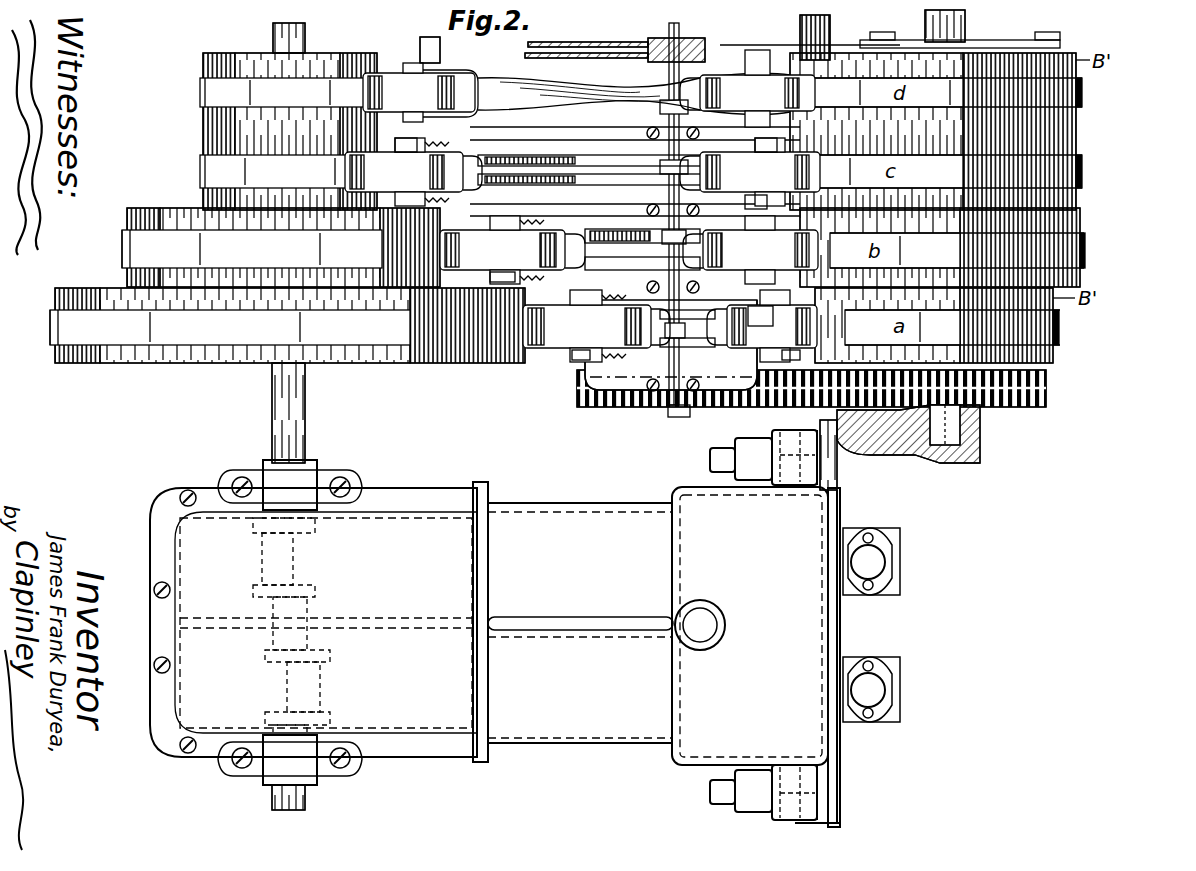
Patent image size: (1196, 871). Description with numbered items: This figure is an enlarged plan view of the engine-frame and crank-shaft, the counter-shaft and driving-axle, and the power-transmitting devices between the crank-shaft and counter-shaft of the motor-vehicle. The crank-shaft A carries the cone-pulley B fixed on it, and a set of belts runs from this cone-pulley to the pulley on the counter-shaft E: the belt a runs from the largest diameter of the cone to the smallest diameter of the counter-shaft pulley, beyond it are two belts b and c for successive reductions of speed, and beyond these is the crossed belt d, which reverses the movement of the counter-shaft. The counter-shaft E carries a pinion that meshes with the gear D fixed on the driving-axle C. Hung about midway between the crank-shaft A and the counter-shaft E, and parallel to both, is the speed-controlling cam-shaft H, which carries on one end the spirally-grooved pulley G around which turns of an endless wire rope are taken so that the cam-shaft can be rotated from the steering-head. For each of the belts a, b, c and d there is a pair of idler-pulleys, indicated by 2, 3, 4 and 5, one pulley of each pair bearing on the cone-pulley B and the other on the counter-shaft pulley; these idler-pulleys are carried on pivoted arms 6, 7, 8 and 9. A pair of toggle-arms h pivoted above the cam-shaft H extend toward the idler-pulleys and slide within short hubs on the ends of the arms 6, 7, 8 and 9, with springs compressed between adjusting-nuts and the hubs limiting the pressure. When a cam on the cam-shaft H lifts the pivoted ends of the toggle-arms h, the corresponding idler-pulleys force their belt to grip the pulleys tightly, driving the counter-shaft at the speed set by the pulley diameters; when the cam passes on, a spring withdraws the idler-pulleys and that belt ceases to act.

The idler-pulley pair 2 is at (670, 326).
The idler-pulley pair 3 is at (1150, 203).
The idler-pulley pair 4 is at (1150, 282).
The idler-pulley pair 5 is at (1130, 118).
The idler-pulley arm 6 is at (578, 355).
The idler-pulley arm 7 is at (525, 285).
The idler-pulley arm 8 is at (400, 142).
The idler-pulley arm 9 is at (840, 130).
The crank-shaft A is at (305, 380).
The cone-pulley B is at (333, 224).
The driving-axle C is at (830, 22).
The gear D is at (1046, 380).
The counter-shaft E is at (965, 20).
The spirally-grooved pulley G is at (712, 35).
The speed-controlling cam-shaft H is at (650, 420).
The belt a is at (287, 325).
The belt b is at (281, 247).
The belt c is at (282, 171).
The crossed belt d is at (282, 92).
The toggle-arms h is at (478, 98).